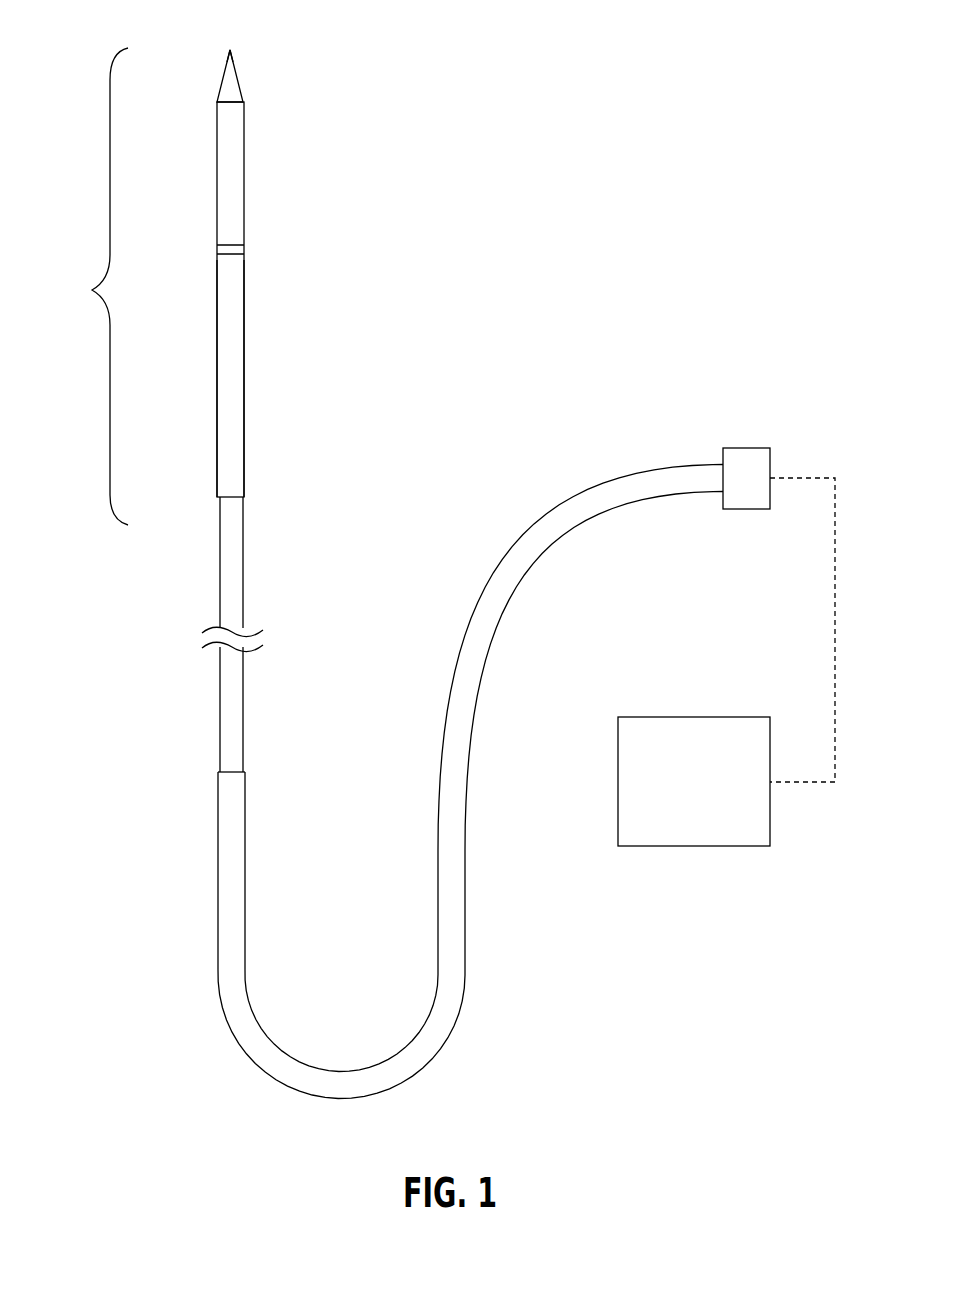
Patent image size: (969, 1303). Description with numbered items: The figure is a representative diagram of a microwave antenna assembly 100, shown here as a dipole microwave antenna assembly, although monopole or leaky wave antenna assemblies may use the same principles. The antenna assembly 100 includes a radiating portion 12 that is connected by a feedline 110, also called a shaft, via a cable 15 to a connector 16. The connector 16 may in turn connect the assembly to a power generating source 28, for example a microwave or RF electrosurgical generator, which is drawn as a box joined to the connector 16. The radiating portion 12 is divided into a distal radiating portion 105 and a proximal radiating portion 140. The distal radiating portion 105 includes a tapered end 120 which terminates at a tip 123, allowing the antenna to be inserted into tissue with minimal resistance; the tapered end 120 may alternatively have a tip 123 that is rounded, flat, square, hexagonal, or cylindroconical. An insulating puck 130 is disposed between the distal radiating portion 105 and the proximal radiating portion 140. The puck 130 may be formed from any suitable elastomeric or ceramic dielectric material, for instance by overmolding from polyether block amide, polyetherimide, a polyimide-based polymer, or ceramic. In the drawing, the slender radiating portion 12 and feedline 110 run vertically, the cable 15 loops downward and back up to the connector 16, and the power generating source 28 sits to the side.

The microwave antenna assembly 100 is at (632, 56).
The radiating portion 12 is at (94, 286).
The tapered end 120 is at (222, 78).
The tip 123 is at (230, 50).
The distal radiating portion 105 is at (278, 163).
The insulating puck 130 is at (246, 248).
The proximal radiating portion 140 is at (278, 363).
The feedline 110 is at (244, 578).
The cable 15 is at (218, 828).
The connector 16 is at (748, 448).
The power generating source 28 is at (696, 717).